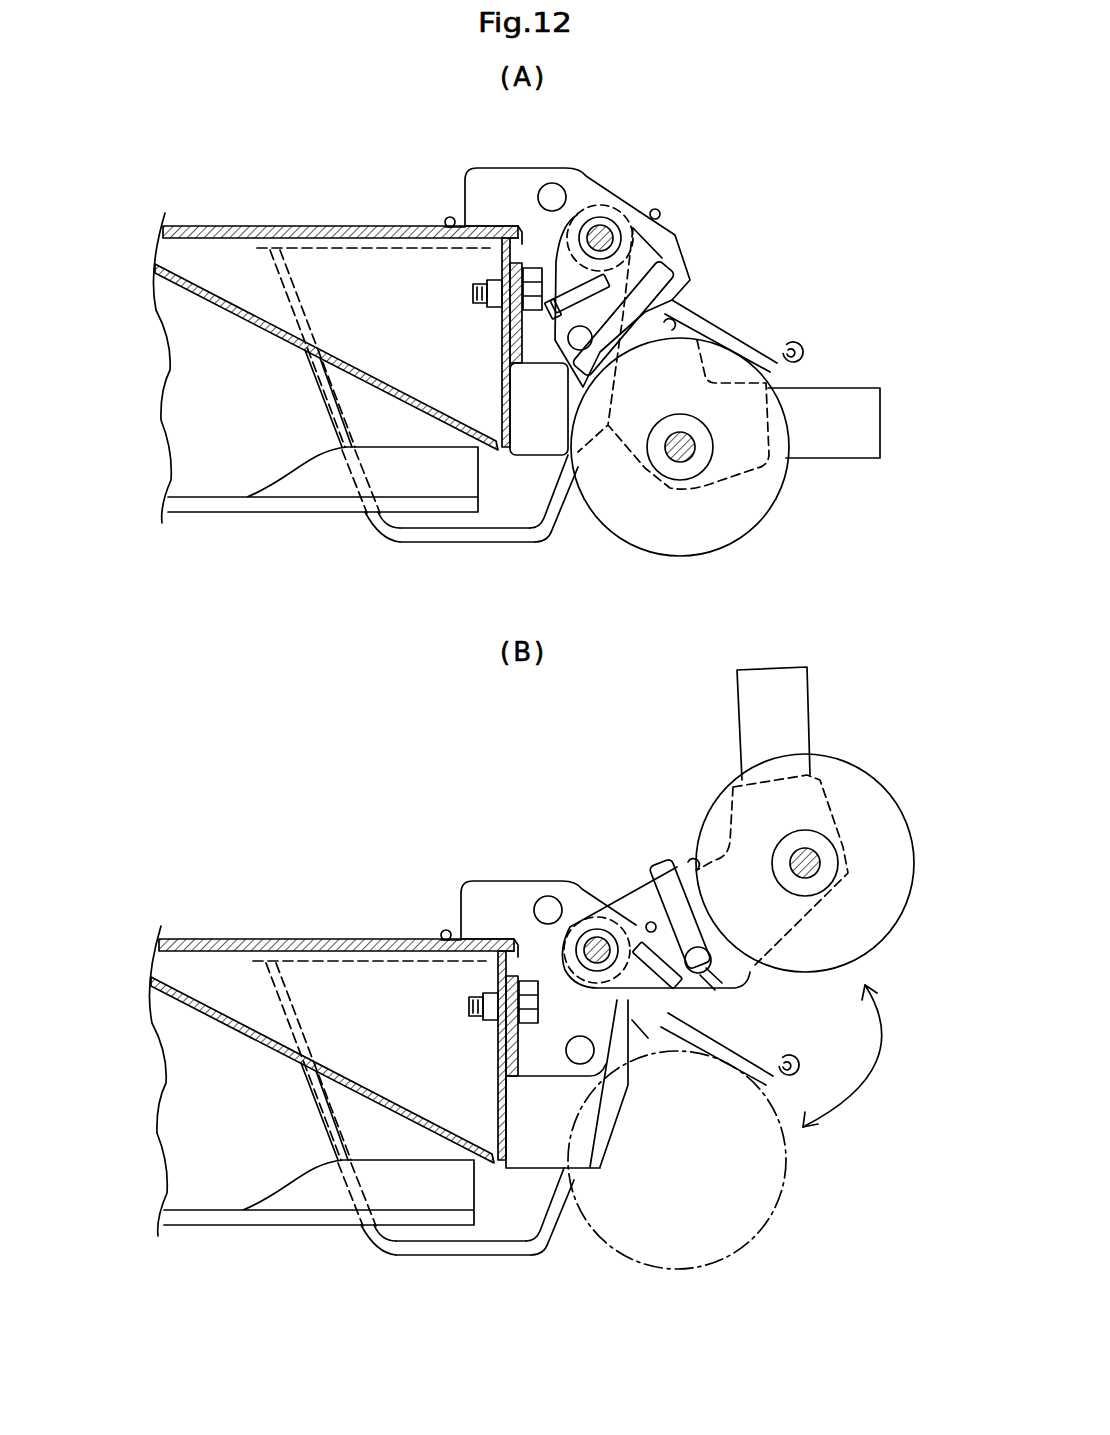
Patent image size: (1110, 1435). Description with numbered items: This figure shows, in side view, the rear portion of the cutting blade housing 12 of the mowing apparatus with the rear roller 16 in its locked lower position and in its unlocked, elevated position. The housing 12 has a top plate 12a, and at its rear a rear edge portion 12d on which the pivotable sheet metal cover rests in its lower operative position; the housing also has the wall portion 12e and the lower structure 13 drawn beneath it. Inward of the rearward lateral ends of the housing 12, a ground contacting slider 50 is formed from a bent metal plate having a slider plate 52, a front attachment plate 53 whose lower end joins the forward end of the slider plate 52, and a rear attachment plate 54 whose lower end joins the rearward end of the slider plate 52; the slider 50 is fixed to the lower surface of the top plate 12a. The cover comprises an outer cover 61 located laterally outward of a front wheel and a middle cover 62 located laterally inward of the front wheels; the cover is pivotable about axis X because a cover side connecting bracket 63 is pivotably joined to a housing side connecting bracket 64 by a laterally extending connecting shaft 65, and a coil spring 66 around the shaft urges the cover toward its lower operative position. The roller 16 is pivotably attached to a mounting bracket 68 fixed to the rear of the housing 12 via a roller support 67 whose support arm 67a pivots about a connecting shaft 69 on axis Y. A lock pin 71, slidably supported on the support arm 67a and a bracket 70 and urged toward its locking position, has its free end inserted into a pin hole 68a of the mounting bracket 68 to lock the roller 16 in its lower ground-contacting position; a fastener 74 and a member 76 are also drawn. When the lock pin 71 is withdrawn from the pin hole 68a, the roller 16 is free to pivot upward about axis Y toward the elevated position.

The cutting blade housing 12 is at (322, 226).
The top plate 12a is at (246, 224).
The rear edge portion 12d is at (642, 1032).
The side wall of main body 12e is at (528, 455).
The floor plate 13 is at (228, 515).
The roller 16 is at (681, 558).
The slider 50 is at (372, 528).
The slider plate 52 is at (454, 546).
The front attachment plate 53 is at (330, 418).
The rear attachment plate 54 is at (570, 505).
The outer cover 61 is at (738, 340).
The middle cover 62 is at (808, 354).
The cover side connecting bracket 63 is at (690, 240).
The housing side connecting bracket 64 is at (470, 180).
The connecting shaft 65 is at (548, 190).
The coil spring 66 is at (660, 210).
The roller support 67 is at (722, 486).
The support arm 67a is at (668, 326).
The mounting bracket 68 is at (540, 370).
The pin hole 68a is at (622, 1080).
The connecting shaft 69 is at (604, 230).
The bracket 70 is at (632, 348).
The lock pin 71 is at (597, 372).
The nut 74 is at (518, 330).
The handle 76 is at (848, 460).